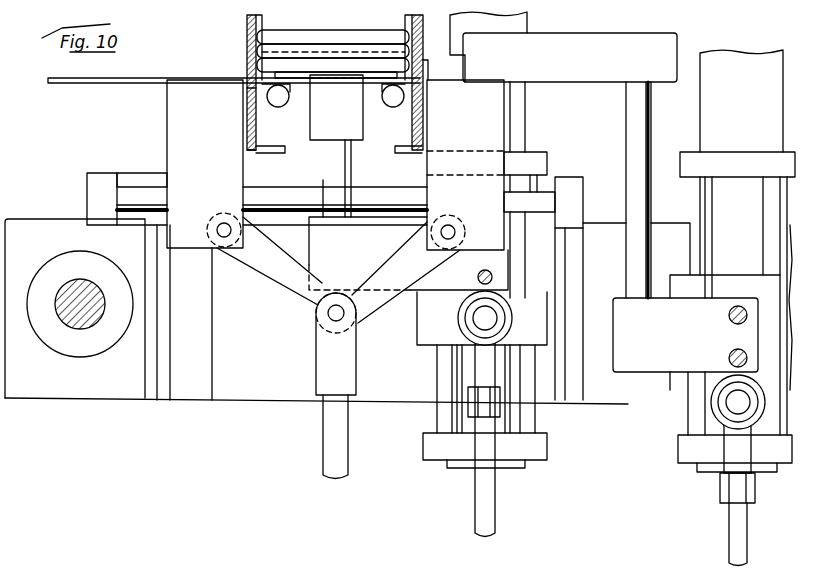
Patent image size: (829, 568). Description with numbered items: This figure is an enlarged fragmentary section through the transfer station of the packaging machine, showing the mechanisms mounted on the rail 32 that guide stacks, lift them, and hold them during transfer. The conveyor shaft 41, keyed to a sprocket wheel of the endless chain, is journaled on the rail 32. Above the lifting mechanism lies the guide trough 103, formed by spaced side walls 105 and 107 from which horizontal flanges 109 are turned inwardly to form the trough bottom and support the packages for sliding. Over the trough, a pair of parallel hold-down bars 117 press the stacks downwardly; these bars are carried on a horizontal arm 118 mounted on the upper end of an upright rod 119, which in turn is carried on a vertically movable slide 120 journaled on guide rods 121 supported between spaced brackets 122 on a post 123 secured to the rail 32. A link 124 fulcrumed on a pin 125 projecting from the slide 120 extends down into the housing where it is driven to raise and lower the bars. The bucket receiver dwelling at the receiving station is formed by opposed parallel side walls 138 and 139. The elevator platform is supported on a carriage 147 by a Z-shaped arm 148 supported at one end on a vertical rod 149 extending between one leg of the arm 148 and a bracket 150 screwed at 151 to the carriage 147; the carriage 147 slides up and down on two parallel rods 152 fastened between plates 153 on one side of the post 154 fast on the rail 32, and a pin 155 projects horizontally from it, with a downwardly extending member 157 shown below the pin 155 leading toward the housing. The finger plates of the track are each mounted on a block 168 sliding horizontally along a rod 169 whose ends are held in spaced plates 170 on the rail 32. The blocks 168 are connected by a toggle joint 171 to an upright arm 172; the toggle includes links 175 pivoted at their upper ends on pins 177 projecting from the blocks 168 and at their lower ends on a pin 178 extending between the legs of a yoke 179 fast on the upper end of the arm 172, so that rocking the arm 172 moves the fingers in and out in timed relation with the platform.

The rail 32 is at (76, 398).
The shaft 41 is at (90, 288).
The guide trough 103 is at (244, 153).
The side wall 105 is at (425, 116).
The side wall 107 is at (250, 125).
The horizontal flanges 109 is at (283, 142).
The hold-down bars 117 is at (284, 104).
The horizontal arm 118 is at (560, 45).
The upright rod 119 is at (652, 100).
The slide 120 is at (676, 416).
The guide rods 121 is at (699, 248).
The brackets 122 is at (685, 160).
The post 123 is at (716, 118).
The link 124 is at (730, 533).
The pin 125 is at (728, 400).
The side wall 138 is at (424, 70).
The side wall 139 is at (247, 33).
The carriage 147 is at (418, 332).
The Z-shaped arm 148 is at (357, 130).
The vertical rod 149 is at (335, 166).
The bracket 150 is at (312, 238).
The screw 151 is at (478, 276).
The parallel rods 152 is at (436, 418).
The plates 153 is at (540, 160).
The post 154 is at (525, 128).
The pin 155 is at (474, 312).
The rod 157 is at (480, 490).
The block 168 is at (175, 144).
The rod 169 is at (141, 187).
The plates 170 is at (87, 181).
The toggle joint 171 is at (309, 332).
The upright arm 172 is at (326, 424).
The links 175 is at (266, 275).
The pins 177 is at (224, 224).
The pin 178 is at (345, 308).
The yoke 179 is at (316, 365).